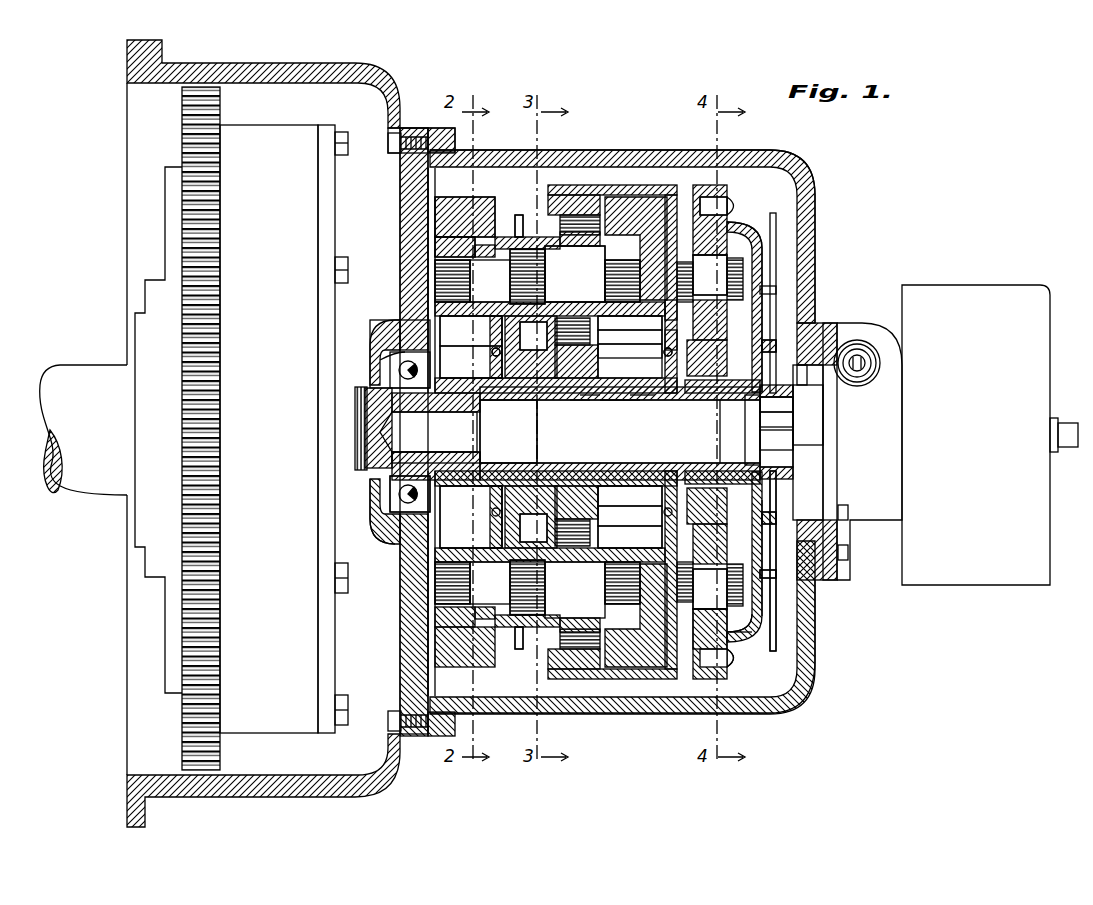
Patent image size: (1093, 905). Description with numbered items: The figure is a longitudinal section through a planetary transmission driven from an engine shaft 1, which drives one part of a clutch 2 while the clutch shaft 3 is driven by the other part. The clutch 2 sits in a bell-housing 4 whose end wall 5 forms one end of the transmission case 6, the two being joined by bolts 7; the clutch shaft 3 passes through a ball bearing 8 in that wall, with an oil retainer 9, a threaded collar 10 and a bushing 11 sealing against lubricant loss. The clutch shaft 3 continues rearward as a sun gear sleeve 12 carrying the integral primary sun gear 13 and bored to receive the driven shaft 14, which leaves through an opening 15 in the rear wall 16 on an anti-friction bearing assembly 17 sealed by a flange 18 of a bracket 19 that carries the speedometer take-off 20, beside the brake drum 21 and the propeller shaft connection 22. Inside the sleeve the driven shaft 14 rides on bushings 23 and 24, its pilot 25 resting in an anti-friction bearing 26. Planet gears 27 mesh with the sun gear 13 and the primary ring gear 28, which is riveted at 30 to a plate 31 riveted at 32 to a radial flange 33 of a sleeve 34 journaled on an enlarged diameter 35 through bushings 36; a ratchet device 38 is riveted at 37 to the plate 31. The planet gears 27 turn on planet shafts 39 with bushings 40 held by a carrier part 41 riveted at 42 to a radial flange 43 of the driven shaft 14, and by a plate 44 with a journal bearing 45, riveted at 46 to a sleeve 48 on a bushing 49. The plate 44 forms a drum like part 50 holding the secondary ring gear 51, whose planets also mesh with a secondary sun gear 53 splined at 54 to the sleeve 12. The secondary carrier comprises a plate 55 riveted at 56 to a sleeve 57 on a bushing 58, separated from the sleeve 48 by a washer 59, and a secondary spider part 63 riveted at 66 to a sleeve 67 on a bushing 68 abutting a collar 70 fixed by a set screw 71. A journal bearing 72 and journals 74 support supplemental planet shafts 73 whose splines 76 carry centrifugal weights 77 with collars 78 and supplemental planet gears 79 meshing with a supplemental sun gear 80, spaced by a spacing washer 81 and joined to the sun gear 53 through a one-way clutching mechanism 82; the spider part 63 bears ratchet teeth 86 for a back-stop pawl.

The engine shaft 1 is at (80, 378).
The clutch 2 is at (285, 135).
The clutch shaft 3 is at (345, 448).
The bell-housing 4 is at (345, 70).
The end wall 5 is at (412, 214).
The transmission case 6 is at (600, 152).
The bolts 7 is at (403, 150).
The ball bearing 8 is at (388, 514).
The oil retainer 9 is at (395, 355).
The collar 10 is at (400, 383).
The bushing 11 is at (392, 522).
The sun gear sleeve 12 is at (615, 403).
The primary sun gear 13 is at (760, 350).
The driven shaft 14 is at (648, 449).
The opening 15 is at (800, 375).
The rear wall 16 is at (818, 279).
The anti-friction bearing assembly 17 is at (810, 425).
The flange 18 is at (830, 430).
The bracket 19 is at (890, 440).
The speedometer take-off 20 is at (880, 370).
The brake drum 21 is at (990, 300).
The propeller shaft connection 22 is at (1068, 418).
The bushing 23 is at (540, 408).
The bushing 24 is at (720, 402).
The pilot 25 is at (462, 440).
The anti-friction bearing 26 is at (430, 436).
The planet gears 27 is at (735, 232).
The primary ring gear 28 is at (722, 195).
The rivets 30 is at (735, 668).
The plate 31 is at (757, 640).
The rivets 32 is at (813, 600).
The radial flange 33 is at (760, 560).
The sleeve 34 is at (776, 418).
The enlarged diameter 35 is at (790, 448).
The bushings 36 is at (772, 442).
The rivets 37 is at (770, 578).
The ratchet device 38 is at (778, 625).
The planet shafts 39 is at (722, 281).
The bushings 40 is at (722, 652).
The carrier part 41 is at (770, 540).
The rivets 42 is at (737, 430).
The radial flange 43 is at (771, 404).
The plate 44 is at (672, 316).
The journal bearing 45 is at (672, 343).
The rivets 46 is at (672, 360).
The sleeve 48 is at (660, 534).
The bushing 49 is at (630, 497).
The drum like part 50 is at (620, 685).
The secondary ring gear 51 is at (580, 685).
The secondary sun gear 53 is at (588, 405).
The spline 54 is at (582, 414).
The plate 55 is at (630, 322).
The rivets 56 is at (630, 337).
The sleeve 57 is at (630, 351).
The bushing 58 is at (642, 405).
The washer 59 is at (630, 535).
The secondary spider part 63 is at (500, 532).
The rivets 66 is at (468, 258).
The sleeve 67 is at (471, 336).
The bushing 68 is at (471, 362).
The collar 70 is at (460, 302).
The set screw 71 is at (452, 562).
The journal bearing 72 is at (496, 350).
The supplemental planet shafts 73 is at (490, 270).
The journals 74 is at (575, 274).
The splines 76 is at (608, 288).
The centrifugal weights 77 is at (460, 215).
The collar 78 is at (400, 320).
The supplemental planet gears 79 is at (545, 245).
The supplemental sun gear 80 is at (533, 337).
The spacing washer 81 is at (508, 431).
The one-way clutching mechanism 82 is at (533, 526).
The ratchet teeth 86 is at (520, 645).